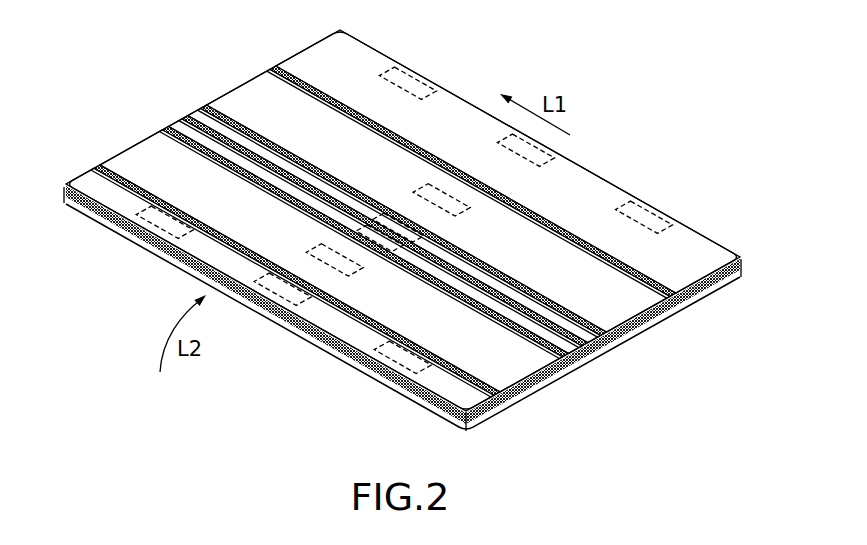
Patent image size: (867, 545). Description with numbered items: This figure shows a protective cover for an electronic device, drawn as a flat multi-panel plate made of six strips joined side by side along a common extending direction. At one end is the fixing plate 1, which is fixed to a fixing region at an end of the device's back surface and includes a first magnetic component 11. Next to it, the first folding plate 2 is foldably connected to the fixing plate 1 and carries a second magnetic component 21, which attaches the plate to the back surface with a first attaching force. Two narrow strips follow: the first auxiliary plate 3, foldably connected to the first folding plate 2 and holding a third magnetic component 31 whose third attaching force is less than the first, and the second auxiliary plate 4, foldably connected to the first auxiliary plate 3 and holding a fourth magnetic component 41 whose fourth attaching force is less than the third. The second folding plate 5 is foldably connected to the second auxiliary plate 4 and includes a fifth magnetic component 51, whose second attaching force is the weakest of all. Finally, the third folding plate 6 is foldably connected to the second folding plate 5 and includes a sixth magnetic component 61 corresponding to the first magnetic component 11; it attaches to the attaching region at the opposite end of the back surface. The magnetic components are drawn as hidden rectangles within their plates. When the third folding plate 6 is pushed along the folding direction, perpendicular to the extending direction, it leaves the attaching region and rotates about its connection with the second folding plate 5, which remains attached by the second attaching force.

The fixing plate 1 is at (697, 273).
The first folding plate 2 is at (634, 308).
The first auxiliary plate 3 is at (590, 336).
The second auxiliary plate 4 is at (580, 354).
The second folding plate 5 is at (522, 376).
The third folding plate 6 is at (476, 405).
The first magnetic component 11 is at (420, 78).
The second magnetic component 21 is at (421, 186).
The third magnetic component 31 is at (373, 218).
The fourth magnetic component 41 is at (358, 228).
The fifth magnetic component 51 is at (315, 248).
The sixth magnetic component 61 is at (140, 234).